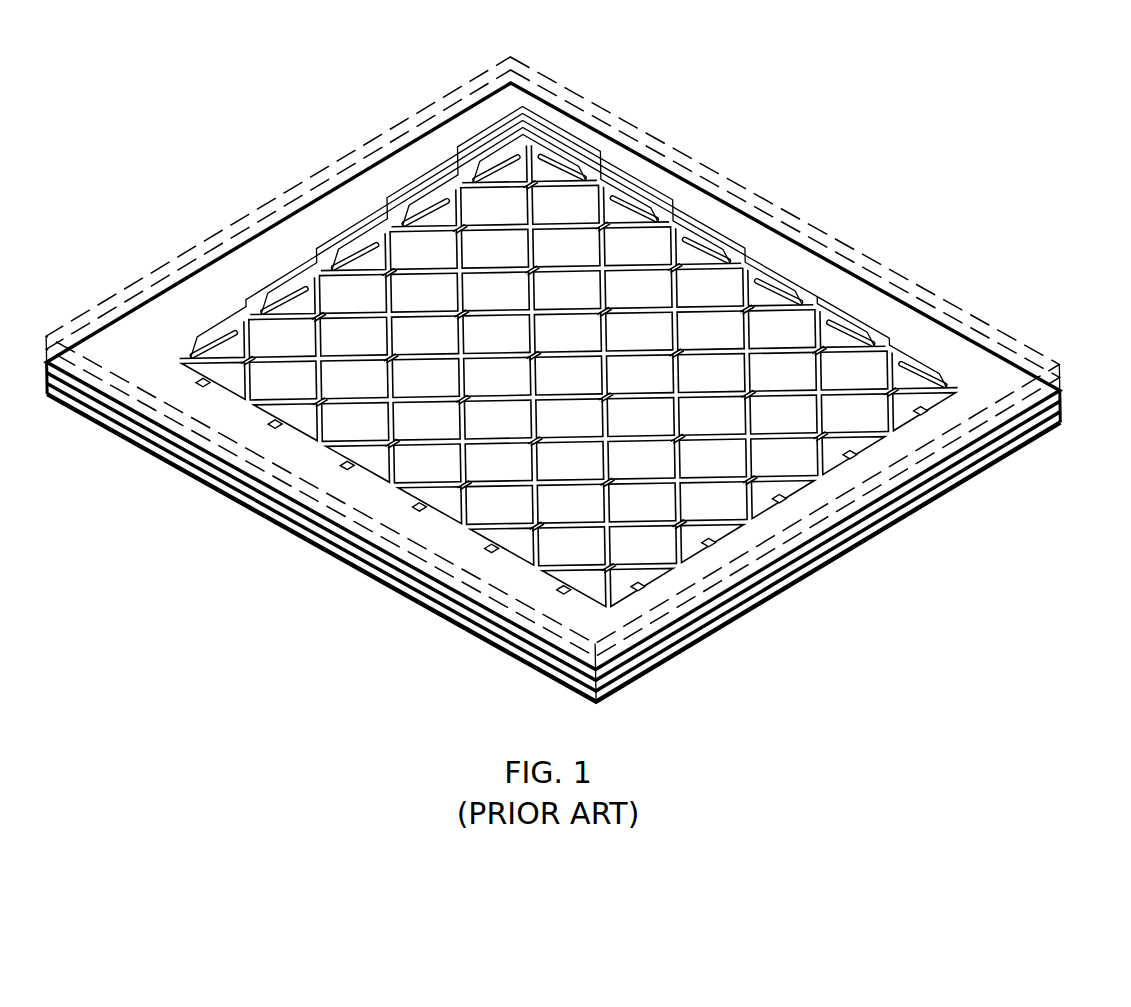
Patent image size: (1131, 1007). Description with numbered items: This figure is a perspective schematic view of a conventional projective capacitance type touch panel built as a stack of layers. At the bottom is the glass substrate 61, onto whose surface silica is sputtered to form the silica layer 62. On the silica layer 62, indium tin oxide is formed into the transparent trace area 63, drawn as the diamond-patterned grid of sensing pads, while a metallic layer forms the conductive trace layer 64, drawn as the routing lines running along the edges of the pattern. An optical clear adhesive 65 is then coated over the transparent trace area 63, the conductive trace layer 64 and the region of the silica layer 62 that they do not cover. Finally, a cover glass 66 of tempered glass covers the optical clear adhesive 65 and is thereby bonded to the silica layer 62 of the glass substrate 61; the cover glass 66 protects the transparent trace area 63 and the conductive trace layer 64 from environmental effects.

The glass substrate 61 is at (730, 608).
The silica layer 62 is at (806, 549).
The transparent trace area 63 is at (936, 416).
The conductive trace layer 64 is at (910, 338).
The optical clear adhesive 65 is at (1062, 388).
The cover glass 66 is at (1062, 375).